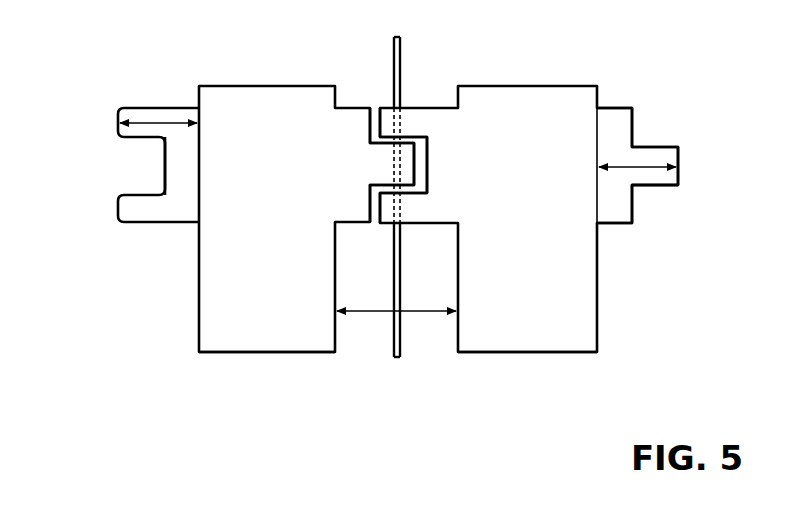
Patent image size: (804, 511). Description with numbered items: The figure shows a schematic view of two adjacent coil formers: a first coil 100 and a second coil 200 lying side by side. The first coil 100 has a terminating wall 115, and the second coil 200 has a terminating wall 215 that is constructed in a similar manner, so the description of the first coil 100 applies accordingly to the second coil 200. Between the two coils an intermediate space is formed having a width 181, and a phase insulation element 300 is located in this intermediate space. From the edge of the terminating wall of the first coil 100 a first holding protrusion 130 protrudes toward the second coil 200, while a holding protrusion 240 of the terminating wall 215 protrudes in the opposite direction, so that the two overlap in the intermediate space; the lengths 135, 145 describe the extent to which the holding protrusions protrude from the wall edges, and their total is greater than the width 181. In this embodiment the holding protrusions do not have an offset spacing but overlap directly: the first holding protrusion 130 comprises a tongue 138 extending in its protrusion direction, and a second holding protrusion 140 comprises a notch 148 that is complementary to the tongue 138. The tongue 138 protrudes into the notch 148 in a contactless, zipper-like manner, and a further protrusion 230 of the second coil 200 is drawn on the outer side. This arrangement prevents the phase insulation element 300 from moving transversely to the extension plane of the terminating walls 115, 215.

The first coil 100 is at (290, 86).
The terminating wall 115 is at (233, 355).
The first holding protrusion 130 is at (353, 107).
The length 135 is at (643, 160).
The tongue 138 is at (660, 188).
The second holding protrusion 140 is at (133, 223).
The length 145 is at (155, 122).
The notch 148 is at (157, 171).
The width 181 is at (360, 312).
The second coil 200 is at (515, 86).
The terminating wall 215 is at (505, 355).
The second connecting element 230 is at (643, 223).
The holding protrusion 240 is at (417, 225).
The phase insulation element 300 is at (402, 53).